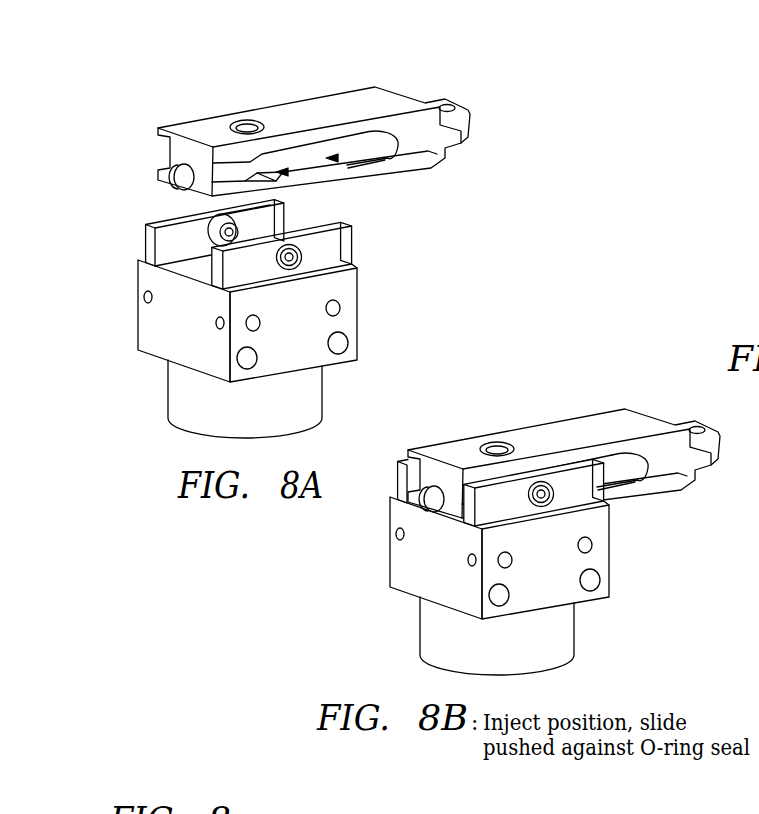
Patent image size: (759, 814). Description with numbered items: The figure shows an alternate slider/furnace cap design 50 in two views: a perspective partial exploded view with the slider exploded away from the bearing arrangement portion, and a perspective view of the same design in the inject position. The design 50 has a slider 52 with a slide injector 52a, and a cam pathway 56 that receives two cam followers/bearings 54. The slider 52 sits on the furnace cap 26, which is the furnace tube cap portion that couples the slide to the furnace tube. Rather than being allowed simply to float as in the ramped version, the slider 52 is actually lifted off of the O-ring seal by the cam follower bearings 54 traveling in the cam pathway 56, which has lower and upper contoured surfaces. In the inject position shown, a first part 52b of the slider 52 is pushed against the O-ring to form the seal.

In FIG. 8A, the furnace cap 26 is at (358, 307).
In FIG. 8B, the furnace cap 26 is at (560, 590).
In FIG. 8A, the alternate slider/furnace cap design 50 is at (328, 241).
In FIG. 8B, the slider 52 is at (635, 425).
In FIG. 8A, the slide injector 52a is at (478, 116).
In FIG. 8B, the first part of the slider 52b is at (565, 437).
In FIG. 8A, the cam follower bearings 54 is at (238, 222).
In FIG. 8B, the cam follower bearings 54 is at (552, 494).
In FIG. 8A, the cam pathway 56 is at (352, 163).
In FIG. 8B, the cam pathway 56 is at (613, 470).